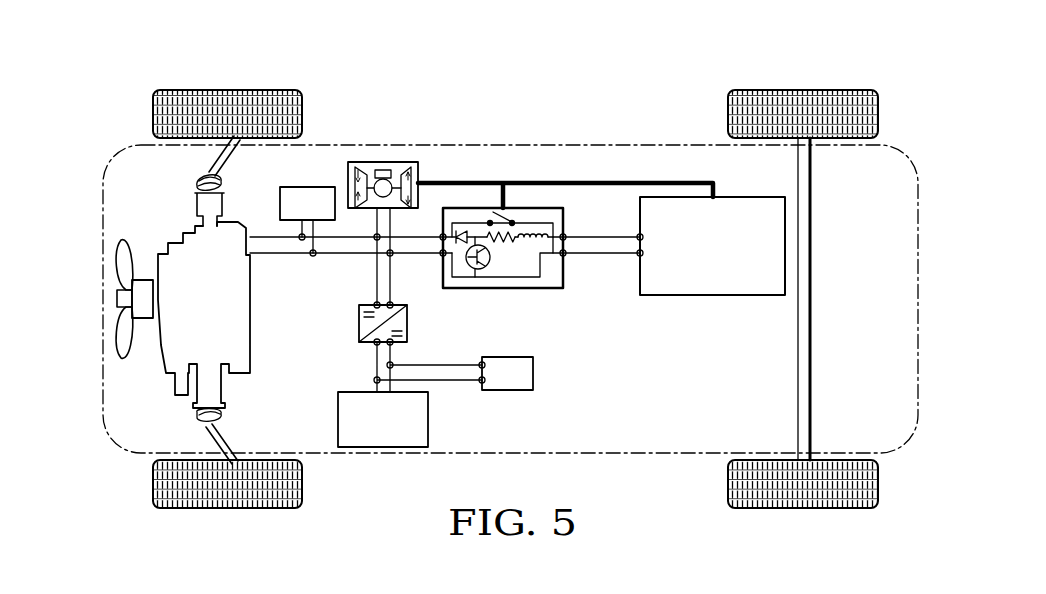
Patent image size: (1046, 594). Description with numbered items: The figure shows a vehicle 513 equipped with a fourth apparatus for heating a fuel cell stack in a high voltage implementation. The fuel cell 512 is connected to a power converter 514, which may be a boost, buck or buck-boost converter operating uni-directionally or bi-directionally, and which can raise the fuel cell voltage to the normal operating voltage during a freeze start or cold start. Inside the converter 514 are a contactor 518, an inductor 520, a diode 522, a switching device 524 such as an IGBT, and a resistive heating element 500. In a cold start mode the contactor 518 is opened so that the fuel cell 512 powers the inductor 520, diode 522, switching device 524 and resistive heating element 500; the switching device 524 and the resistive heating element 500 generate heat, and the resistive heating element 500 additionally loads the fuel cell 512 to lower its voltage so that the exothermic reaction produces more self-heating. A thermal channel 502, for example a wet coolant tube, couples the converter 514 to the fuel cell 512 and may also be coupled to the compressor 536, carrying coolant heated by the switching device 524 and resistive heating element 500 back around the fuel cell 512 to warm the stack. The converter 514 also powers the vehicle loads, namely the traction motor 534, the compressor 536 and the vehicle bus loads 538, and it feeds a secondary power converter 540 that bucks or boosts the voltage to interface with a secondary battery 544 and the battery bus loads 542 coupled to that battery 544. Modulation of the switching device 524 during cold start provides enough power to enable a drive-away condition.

The vehicle 513 is at (643, 73).
The thermal channel 502 is at (690, 183).
The fuel cell 512 is at (712, 297).
The power converter 514 is at (543, 251).
The contactor 518 is at (505, 214).
The inductor 520 is at (540, 228).
The diode 522 is at (458, 230).
The switching device 524 is at (484, 268).
The resistive heating element 500 is at (497, 240).
The traction motor 534 is at (250, 318).
The compressor 536 is at (385, 162).
The vehicle bus loads 538 is at (306, 187).
The secondary power converter 540 is at (358, 322).
The battery bus loads 542 is at (533, 375).
The secondary battery 544 is at (428, 410).